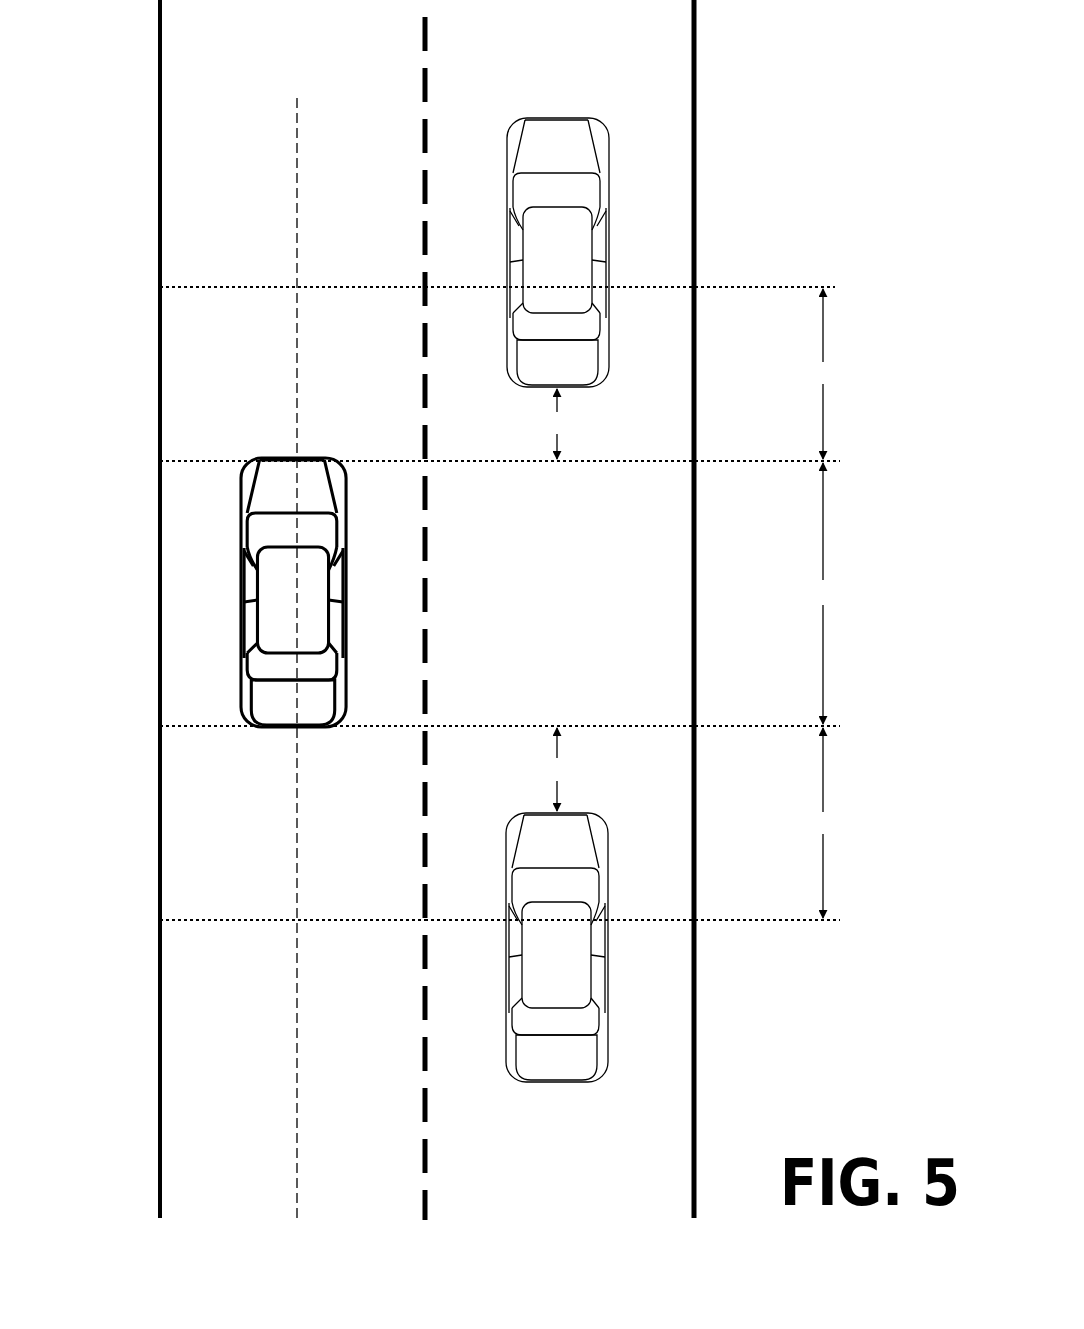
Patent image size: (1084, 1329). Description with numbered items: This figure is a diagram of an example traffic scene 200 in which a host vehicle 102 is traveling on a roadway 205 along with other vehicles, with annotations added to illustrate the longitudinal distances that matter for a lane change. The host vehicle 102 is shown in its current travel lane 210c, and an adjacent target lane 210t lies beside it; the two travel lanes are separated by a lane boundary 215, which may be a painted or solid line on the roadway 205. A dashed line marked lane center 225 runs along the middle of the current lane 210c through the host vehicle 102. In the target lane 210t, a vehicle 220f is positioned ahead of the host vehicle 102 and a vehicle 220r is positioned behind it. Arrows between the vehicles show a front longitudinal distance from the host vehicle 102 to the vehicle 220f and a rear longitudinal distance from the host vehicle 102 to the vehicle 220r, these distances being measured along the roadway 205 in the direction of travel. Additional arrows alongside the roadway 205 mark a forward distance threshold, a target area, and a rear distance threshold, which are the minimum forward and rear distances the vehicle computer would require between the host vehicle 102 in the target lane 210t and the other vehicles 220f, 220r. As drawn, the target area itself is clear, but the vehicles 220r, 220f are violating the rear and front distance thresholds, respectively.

The traffic scene 200 is at (809, 64).
The roadway 205 is at (157, 343).
The current travel lane 210c is at (268, 69).
The target lane 210t is at (581, 71).
The lane boundary 215 is at (422, 123).
The lane center 225 is at (294, 235).
The host vehicle 102 is at (238, 569).
The vehicle 220f is at (582, 273).
The vehicle 220r is at (582, 968).